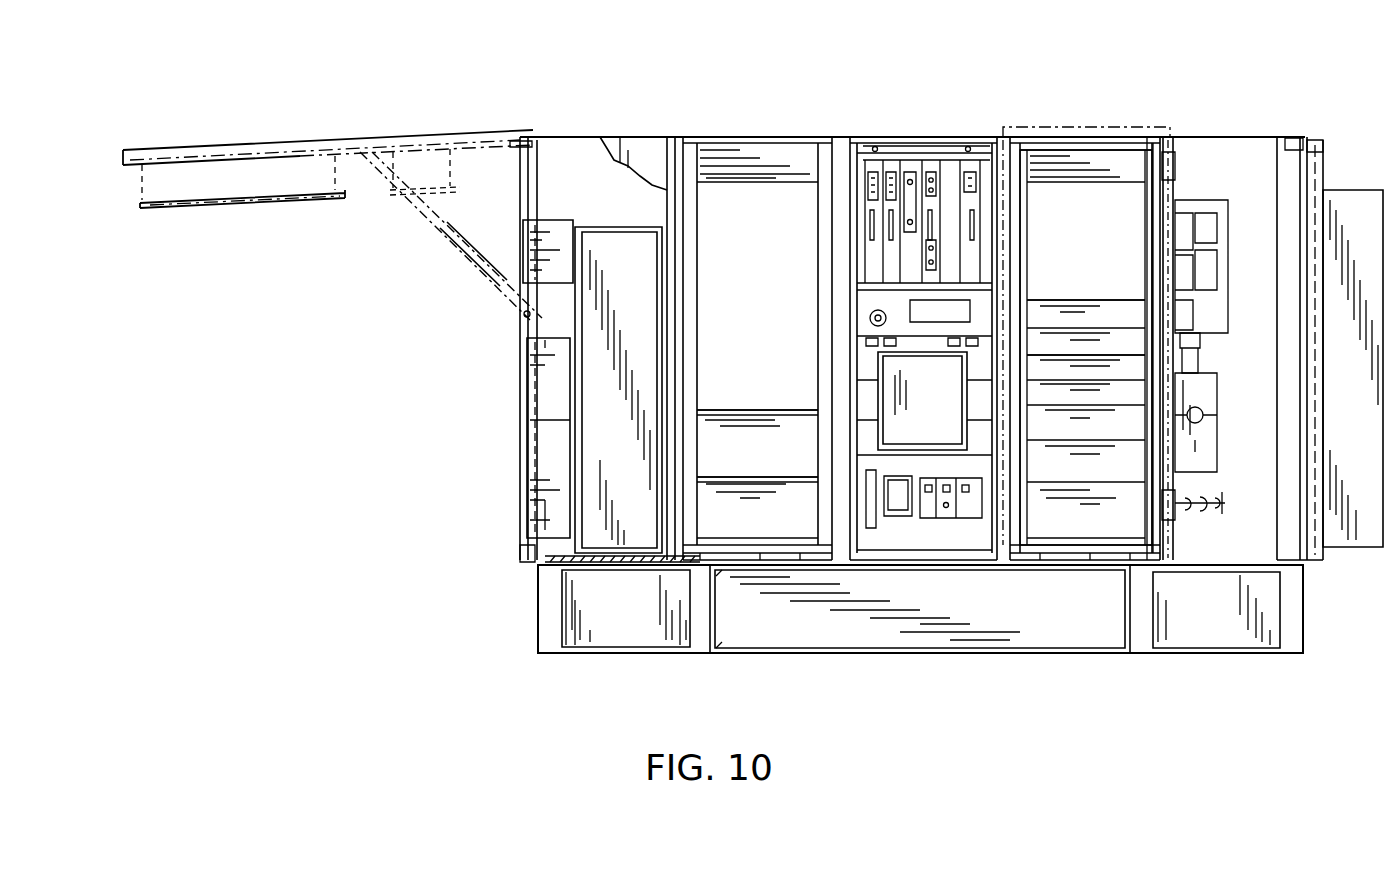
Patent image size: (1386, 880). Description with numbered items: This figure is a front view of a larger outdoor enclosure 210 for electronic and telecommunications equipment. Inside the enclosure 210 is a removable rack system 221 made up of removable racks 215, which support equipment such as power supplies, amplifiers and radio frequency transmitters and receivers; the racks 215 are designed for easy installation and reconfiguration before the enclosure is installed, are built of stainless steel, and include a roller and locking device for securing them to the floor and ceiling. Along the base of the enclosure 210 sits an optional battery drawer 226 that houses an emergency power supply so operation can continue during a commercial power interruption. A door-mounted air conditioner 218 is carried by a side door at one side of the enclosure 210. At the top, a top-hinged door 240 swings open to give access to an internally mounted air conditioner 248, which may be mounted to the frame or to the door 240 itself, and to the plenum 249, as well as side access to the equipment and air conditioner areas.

The enclosure 210 is at (1242, 112).
The removable racks 215 is at (730, 410).
The door-mounted air conditioner 218 is at (1355, 547).
The removable rack system 221 is at (1090, 142).
The battery drawer 226 is at (947, 622).
The top-hinged door 240 is at (256, 144).
The internally mounted air conditioner 248 is at (239, 196).
The plenum 249 is at (520, 432).